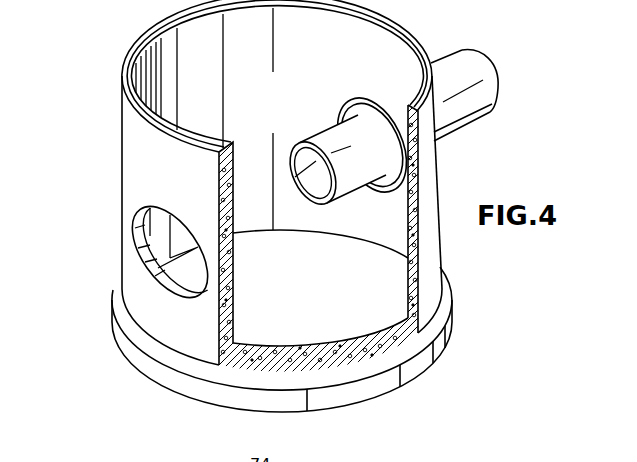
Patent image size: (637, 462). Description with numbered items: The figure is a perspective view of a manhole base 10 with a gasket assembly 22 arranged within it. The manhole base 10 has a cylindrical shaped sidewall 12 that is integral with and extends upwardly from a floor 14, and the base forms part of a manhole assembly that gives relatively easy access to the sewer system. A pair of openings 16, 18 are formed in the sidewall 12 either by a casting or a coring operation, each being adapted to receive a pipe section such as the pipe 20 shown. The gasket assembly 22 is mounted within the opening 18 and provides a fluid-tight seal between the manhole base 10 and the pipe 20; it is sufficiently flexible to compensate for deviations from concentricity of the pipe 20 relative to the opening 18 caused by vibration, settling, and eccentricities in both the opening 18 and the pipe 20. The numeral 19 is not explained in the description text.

The manhole base 10 is at (68, 360).
The sidewall 12 is at (123, 140).
The floor 14 is at (300, 296).
The opening 16 is at (145, 230).
The opening 18 is at (350, 101).
The bore surface of opening 19 is at (150, 271).
The pipe section 20 is at (473, 109).
The gasket assembly 22 is at (310, 109).